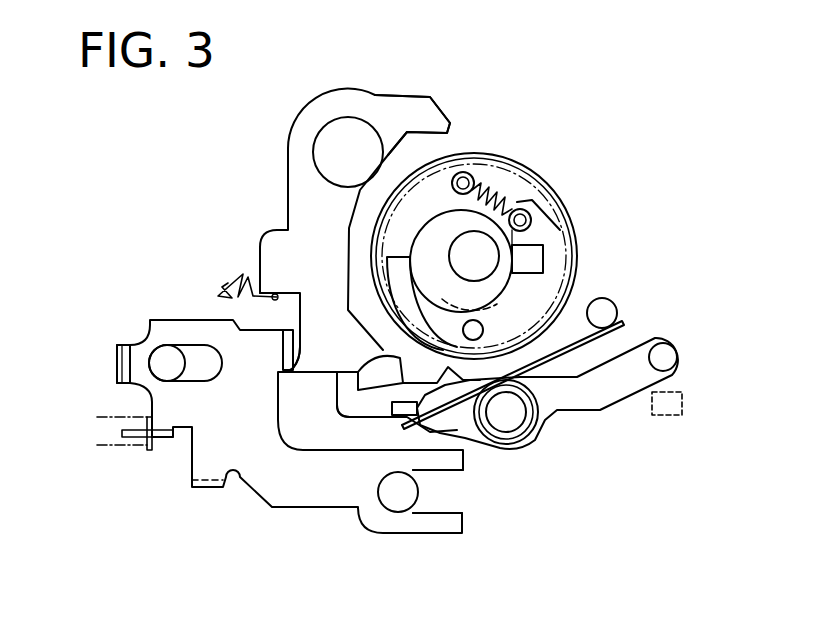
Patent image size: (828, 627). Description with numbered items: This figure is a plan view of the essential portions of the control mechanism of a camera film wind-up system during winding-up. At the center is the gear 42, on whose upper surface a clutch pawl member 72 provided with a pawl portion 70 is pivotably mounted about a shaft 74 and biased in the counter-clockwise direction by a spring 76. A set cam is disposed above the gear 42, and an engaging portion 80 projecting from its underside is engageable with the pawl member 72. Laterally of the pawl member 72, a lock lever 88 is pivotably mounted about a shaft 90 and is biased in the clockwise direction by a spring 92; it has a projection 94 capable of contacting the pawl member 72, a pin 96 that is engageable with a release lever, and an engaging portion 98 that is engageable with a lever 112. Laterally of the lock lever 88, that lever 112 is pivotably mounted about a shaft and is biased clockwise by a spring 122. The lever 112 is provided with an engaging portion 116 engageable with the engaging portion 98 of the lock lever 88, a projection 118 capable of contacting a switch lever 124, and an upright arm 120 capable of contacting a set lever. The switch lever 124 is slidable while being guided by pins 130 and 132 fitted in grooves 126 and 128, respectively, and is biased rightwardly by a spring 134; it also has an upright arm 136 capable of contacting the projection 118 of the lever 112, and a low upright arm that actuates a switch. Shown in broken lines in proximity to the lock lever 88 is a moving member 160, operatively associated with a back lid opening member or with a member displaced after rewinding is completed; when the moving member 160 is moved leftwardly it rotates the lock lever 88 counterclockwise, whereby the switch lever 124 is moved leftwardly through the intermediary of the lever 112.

The gear 42 is at (497, 178).
The pawl portion 70 is at (545, 262).
The clutch pawl member 72 is at (562, 282).
The shaft 74 is at (480, 330).
The spring 76 is at (528, 173).
The engaging portion 80 is at (438, 228).
The lock lever 88 is at (573, 414).
The shaft 90 is at (507, 418).
The spring 92 is at (622, 326).
The projection 94 is at (392, 360).
The pin 96 is at (678, 356).
The engaging portion 98 is at (338, 400).
The lever 112 is at (288, 200).
The engaging portion 116 is at (373, 383).
The projection 118 is at (294, 368).
The upright arm 120 is at (445, 110).
The spring 122 is at (228, 283).
The switch lever 124 is at (315, 508).
The groove 126 is at (428, 497).
The groove 128 is at (198, 345).
The pin 130 is at (383, 491).
The pin 132 is at (160, 352).
The spring 134 is at (120, 450).
The upright arm 136 is at (283, 350).
The moving member 160 is at (684, 403).